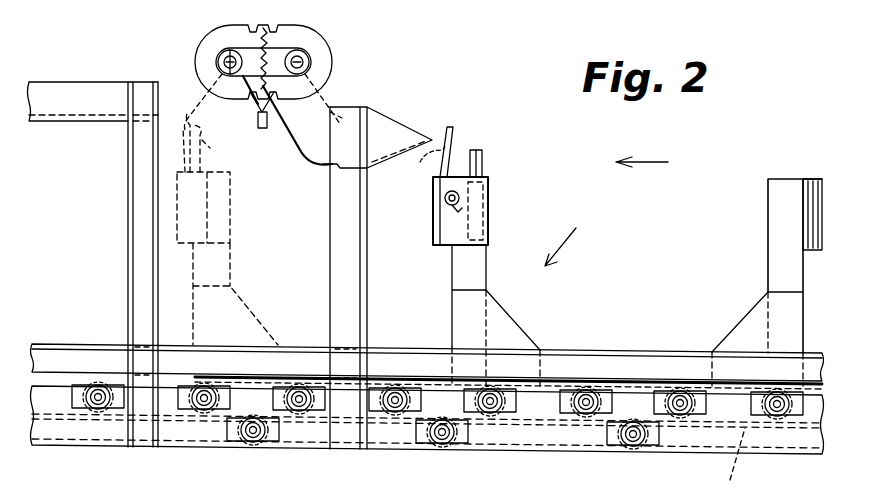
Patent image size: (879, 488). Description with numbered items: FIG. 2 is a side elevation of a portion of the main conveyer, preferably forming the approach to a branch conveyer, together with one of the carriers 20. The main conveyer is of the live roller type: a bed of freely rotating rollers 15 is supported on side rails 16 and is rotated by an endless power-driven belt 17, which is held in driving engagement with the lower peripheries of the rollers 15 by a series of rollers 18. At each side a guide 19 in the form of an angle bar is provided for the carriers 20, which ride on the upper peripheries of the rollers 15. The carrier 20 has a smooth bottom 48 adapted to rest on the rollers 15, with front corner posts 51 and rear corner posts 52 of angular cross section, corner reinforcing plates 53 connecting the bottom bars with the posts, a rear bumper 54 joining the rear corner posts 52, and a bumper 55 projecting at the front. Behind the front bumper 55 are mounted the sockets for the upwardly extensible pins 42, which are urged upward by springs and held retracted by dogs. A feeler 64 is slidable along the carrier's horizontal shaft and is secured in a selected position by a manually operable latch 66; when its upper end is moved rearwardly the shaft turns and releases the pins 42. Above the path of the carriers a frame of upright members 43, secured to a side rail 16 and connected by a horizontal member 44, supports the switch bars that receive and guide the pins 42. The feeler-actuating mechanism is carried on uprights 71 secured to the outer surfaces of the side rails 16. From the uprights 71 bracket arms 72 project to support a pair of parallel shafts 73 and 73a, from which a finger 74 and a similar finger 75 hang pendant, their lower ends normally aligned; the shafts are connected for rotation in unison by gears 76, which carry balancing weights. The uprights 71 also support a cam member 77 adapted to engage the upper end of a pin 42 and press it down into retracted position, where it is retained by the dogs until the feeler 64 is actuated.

The rollers 15 is at (100, 384).
The side rails 16 is at (509, 452).
The endless power-driven belt 17 is at (733, 458).
The rollers 18 is at (268, 452).
The guide 19 is at (74, 346).
The carrier 20 is at (566, 247).
The pin 42 is at (230, 176).
The upright member 43 is at (141, 232).
The horizontal member 44 is at (88, 103).
The smooth bottom 48 is at (616, 380).
The front corner post 51 is at (480, 255).
The rear corner post 52 is at (768, 211).
The corner reinforcing plate 53 is at (504, 324).
The rear bumper 54 is at (812, 178).
The bumper 55 is at (434, 245).
The feeler 64 is at (195, 140).
The latch 66 is at (423, 165).
The upright 71 is at (332, 253).
The bracket arm 72 is at (300, 152).
The shaft 73 is at (315, 66).
The shaft 73a is at (219, 60).
The finger 74 is at (263, 129).
The finger 75 is at (262, 104).
The gears 76 is at (258, 28).
The cam member 77 is at (385, 166).